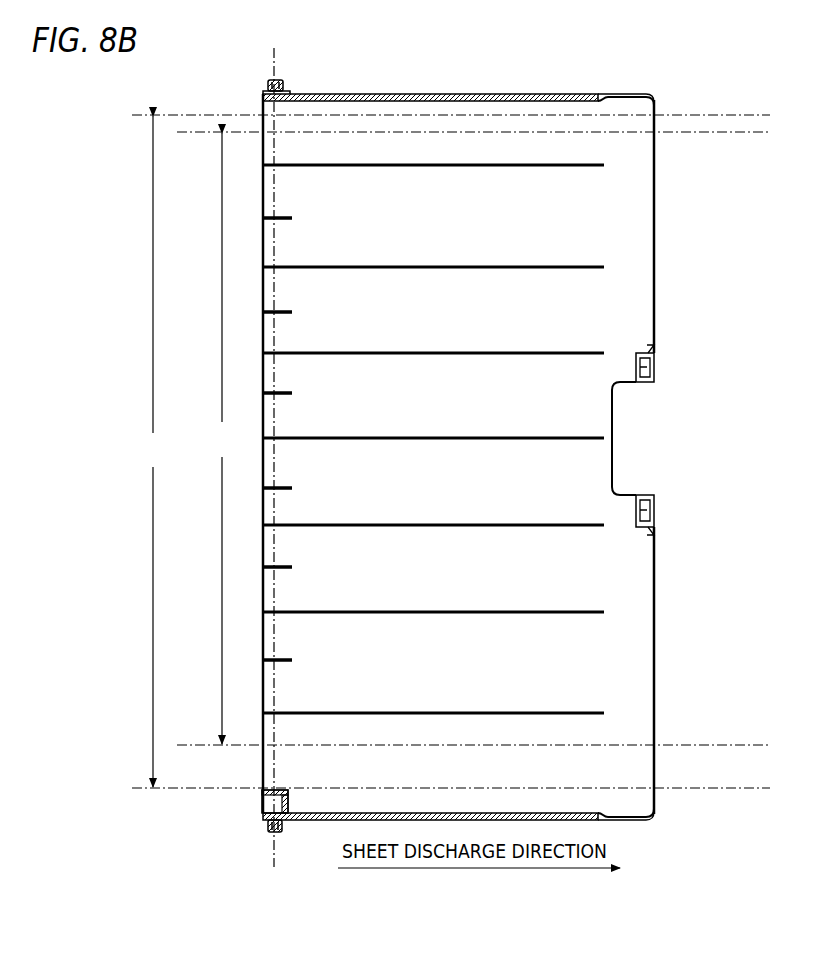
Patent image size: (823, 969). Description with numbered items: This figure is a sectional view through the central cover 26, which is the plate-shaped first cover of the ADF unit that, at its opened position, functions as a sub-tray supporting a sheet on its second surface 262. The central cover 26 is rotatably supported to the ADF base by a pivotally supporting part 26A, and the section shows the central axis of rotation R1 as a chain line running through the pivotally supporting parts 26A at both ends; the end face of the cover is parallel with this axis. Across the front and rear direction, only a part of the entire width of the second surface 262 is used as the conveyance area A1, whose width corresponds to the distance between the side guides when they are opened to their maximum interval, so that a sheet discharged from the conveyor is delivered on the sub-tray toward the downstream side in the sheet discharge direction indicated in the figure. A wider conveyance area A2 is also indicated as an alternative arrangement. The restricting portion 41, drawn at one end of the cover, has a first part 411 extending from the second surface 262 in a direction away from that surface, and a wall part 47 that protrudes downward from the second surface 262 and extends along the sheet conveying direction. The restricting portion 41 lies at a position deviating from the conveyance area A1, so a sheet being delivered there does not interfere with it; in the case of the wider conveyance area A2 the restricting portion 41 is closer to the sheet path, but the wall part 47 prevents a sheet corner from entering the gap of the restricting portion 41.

The central cover 26 is at (612, 96).
The pivotally supporting part 26A is at (268, 86).
The second surface 262 is at (637, 213).
The restricting portion 41 is at (289, 792).
The first part 411 is at (287, 806).
The wall part 47 is at (268, 791).
The conveyance area A1 is at (223, 438).
The conveyance area A2 is at (155, 451).
The central axis of rotation R1 is at (278, 873).